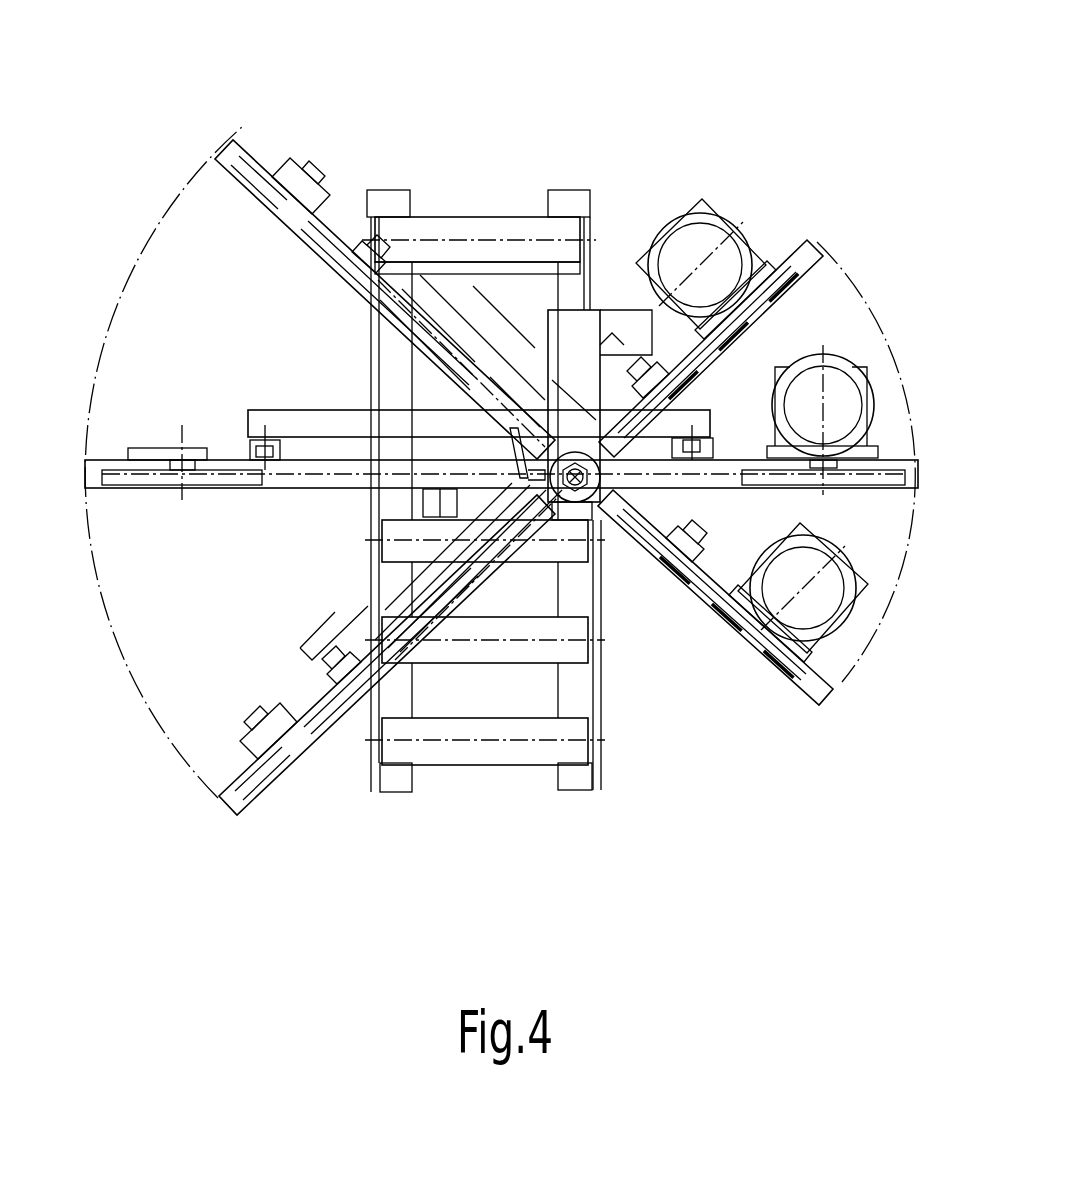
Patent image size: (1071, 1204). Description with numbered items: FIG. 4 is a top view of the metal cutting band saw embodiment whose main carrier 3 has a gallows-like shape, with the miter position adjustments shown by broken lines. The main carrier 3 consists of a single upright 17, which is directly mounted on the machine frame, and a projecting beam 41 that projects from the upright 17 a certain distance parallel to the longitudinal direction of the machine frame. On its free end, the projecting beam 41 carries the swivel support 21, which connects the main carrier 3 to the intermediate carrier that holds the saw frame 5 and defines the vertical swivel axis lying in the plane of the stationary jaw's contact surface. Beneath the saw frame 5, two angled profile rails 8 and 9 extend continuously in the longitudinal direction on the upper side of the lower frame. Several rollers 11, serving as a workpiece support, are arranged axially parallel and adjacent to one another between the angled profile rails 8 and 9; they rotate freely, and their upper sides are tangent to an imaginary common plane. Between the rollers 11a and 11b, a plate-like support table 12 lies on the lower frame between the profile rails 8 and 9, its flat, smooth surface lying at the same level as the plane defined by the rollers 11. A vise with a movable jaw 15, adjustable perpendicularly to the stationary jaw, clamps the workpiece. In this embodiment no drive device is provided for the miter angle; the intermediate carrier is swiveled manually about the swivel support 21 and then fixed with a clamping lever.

The main carrier 3 is at (865, 400).
The saw frame 5 is at (238, 140).
The angled profile rail 8 is at (402, 778).
The angled profile rail 9 is at (578, 773).
The rollers 11 is at (572, 645).
The roller 11a is at (492, 230).
The roller 11b is at (367, 536).
The support table 12 is at (400, 367).
The movable jaw 15 is at (370, 503).
The upright 17 is at (720, 222).
The swivel support 21 is at (575, 470).
The projecting beam 41 is at (574, 325).